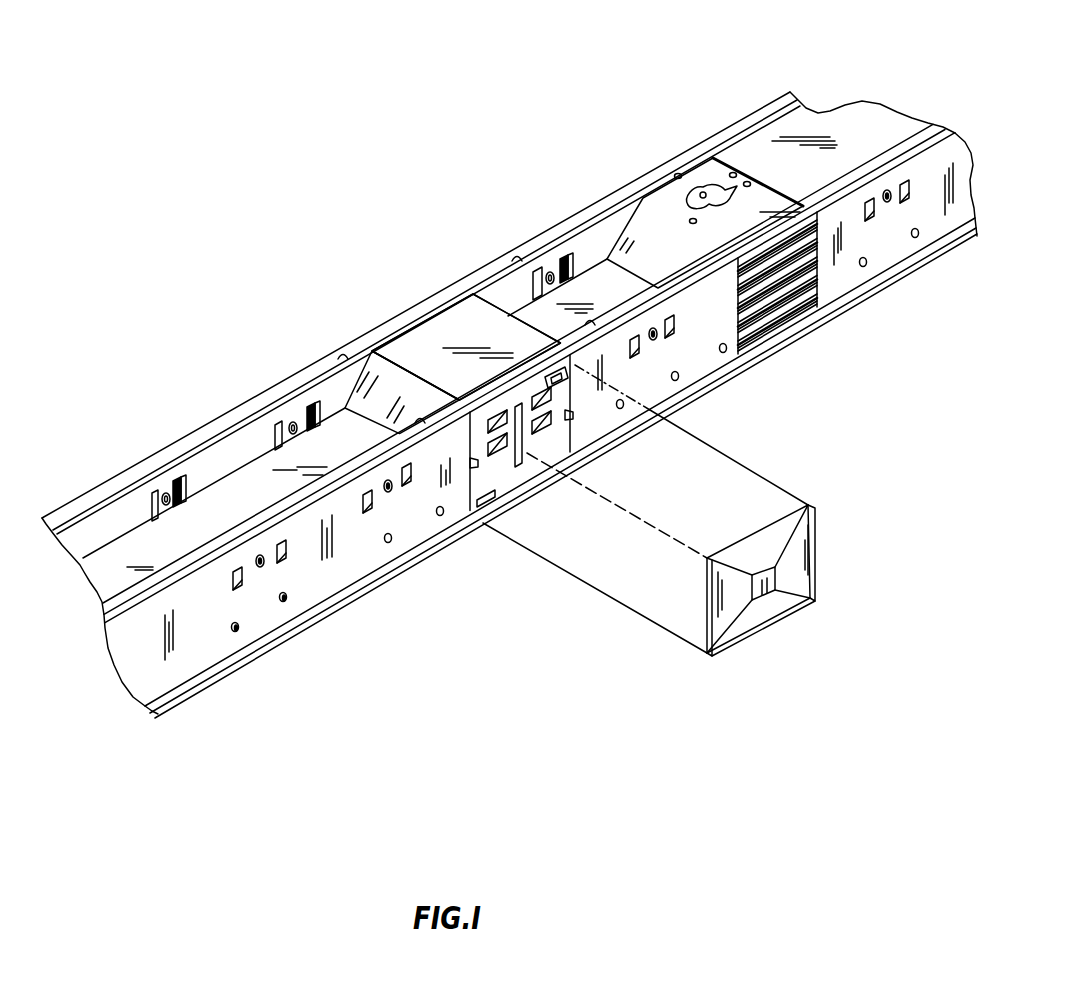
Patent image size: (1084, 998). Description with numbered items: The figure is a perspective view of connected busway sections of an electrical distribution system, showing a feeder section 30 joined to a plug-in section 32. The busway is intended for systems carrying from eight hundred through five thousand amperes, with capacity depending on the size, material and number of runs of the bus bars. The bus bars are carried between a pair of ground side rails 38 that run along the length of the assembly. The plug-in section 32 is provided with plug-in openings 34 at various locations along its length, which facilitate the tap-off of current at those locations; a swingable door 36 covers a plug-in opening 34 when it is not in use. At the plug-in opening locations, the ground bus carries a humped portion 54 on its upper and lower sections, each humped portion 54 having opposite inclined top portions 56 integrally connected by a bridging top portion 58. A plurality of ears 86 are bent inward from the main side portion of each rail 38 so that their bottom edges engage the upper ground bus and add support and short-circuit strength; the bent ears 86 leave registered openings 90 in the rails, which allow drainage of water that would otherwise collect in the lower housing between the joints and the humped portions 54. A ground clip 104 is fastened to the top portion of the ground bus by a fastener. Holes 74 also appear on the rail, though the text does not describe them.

The feeder section 30 is at (908, 286).
The plug-in section 32 is at (440, 556).
The plug-in opening 34 is at (798, 347).
The swingable door 36 is at (757, 638).
The ground side rail 38 is at (188, 446).
The humped portion 54 is at (471, 316).
The inclined top portion 56 is at (388, 397).
The bridging top portion 58 is at (445, 328).
The mounting holes 74 is at (286, 603).
The ear 86 is at (158, 490).
The opening 90 is at (404, 487).
The ground clip 104 is at (560, 372).